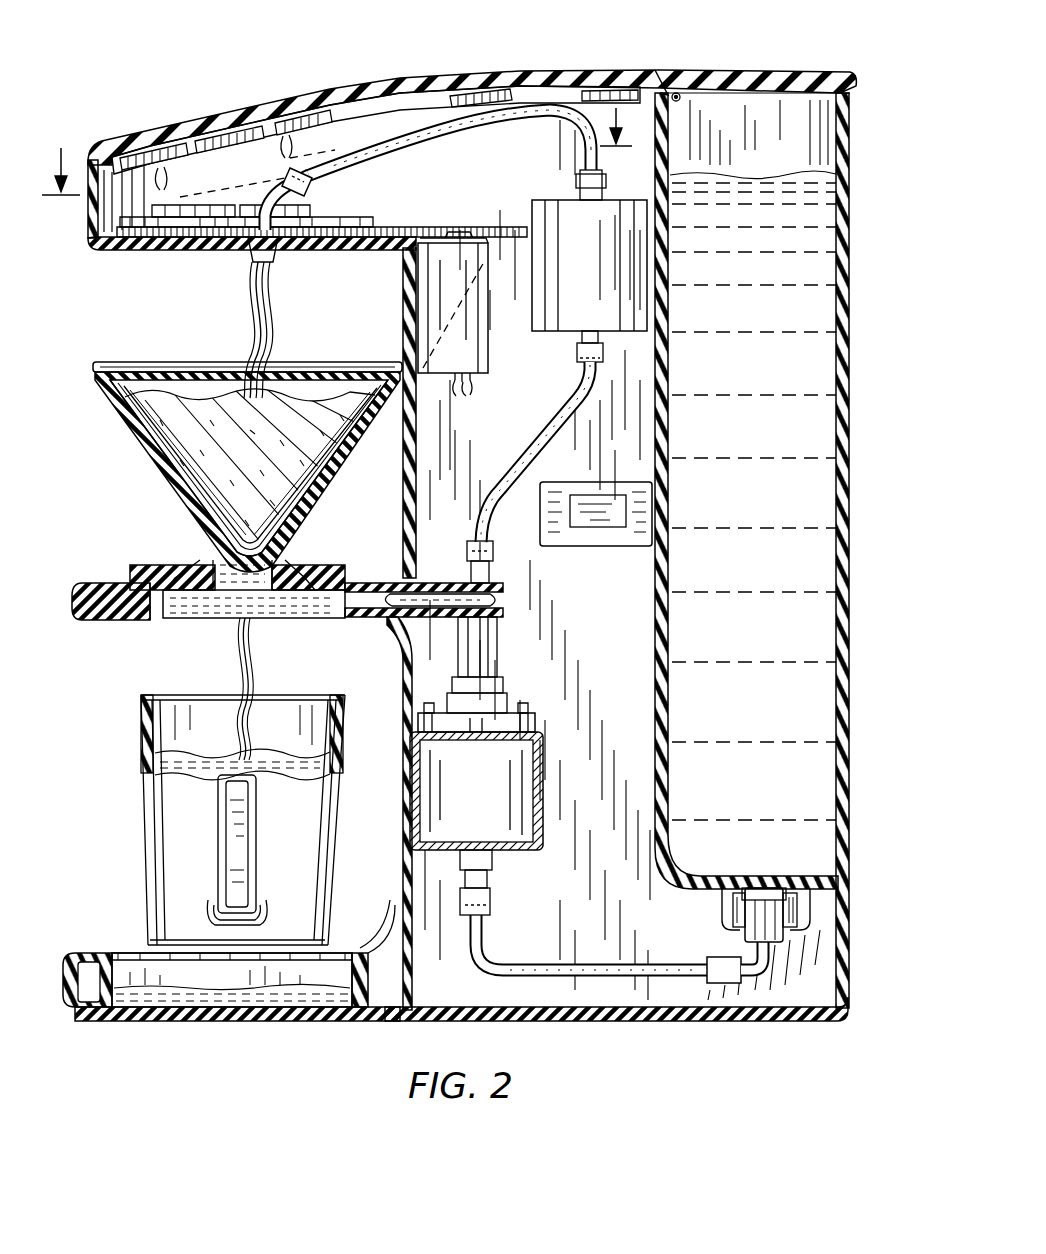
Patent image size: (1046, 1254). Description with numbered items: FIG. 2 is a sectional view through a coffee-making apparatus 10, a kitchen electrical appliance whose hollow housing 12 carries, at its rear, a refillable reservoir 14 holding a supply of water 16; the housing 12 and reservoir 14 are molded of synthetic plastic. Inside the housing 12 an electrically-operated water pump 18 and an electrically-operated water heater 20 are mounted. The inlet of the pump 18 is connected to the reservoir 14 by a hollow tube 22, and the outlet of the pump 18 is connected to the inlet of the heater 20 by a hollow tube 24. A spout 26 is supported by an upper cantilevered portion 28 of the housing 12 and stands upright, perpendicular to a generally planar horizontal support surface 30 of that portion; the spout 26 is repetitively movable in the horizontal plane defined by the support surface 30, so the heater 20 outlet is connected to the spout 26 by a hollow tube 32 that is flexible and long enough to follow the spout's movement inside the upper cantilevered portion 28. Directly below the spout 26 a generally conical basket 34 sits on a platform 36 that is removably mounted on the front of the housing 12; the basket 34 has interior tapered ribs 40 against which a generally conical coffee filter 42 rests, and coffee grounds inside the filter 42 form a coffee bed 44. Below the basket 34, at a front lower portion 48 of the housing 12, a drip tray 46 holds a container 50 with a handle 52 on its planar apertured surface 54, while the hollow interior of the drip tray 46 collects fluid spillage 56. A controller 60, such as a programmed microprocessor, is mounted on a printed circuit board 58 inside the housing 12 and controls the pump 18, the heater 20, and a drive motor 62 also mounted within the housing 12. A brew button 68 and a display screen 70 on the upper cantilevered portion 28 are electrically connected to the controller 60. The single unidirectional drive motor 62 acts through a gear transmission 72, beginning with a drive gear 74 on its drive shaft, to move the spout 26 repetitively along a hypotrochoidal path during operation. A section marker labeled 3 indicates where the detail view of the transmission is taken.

The section line 3- 3 is at (337, 148).
The apparatus 10 is at (838, 62).
The housing 12 is at (626, 70).
The reservoir 14 is at (848, 396).
The supply of water 16 is at (766, 320).
The water pump 18 is at (498, 840).
The water heater 20 is at (560, 200).
The hollow tube 22 is at (528, 962).
The hollow tube 24 is at (512, 462).
The spout 26 is at (246, 256).
The upper cantilevered portion 28 is at (90, 220).
The support surface 30 is at (130, 248).
The hollow tube 32 is at (412, 140).
The basket 34 is at (150, 480).
The platform 36 is at (96, 584).
The tapered ribs 40 is at (118, 446).
The coffee filter 42 is at (122, 396).
The coffee bed 44 is at (185, 400).
The drip tray 46 is at (118, 945).
The front lower portion 48 is at (72, 966).
The container 50 is at (140, 838).
The handle 52 is at (220, 872).
The apertured surface 54 is at (352, 925).
The fluid spillage 56 is at (145, 1000).
The printed circuit board 58 is at (604, 486).
The controller 60 is at (596, 525).
The drive motor 62 is at (450, 376).
The brew button 68 is at (136, 150).
The display screen 70 is at (255, 122).
The gear transmission 72 is at (330, 204).
The drive gear 74 is at (470, 230).